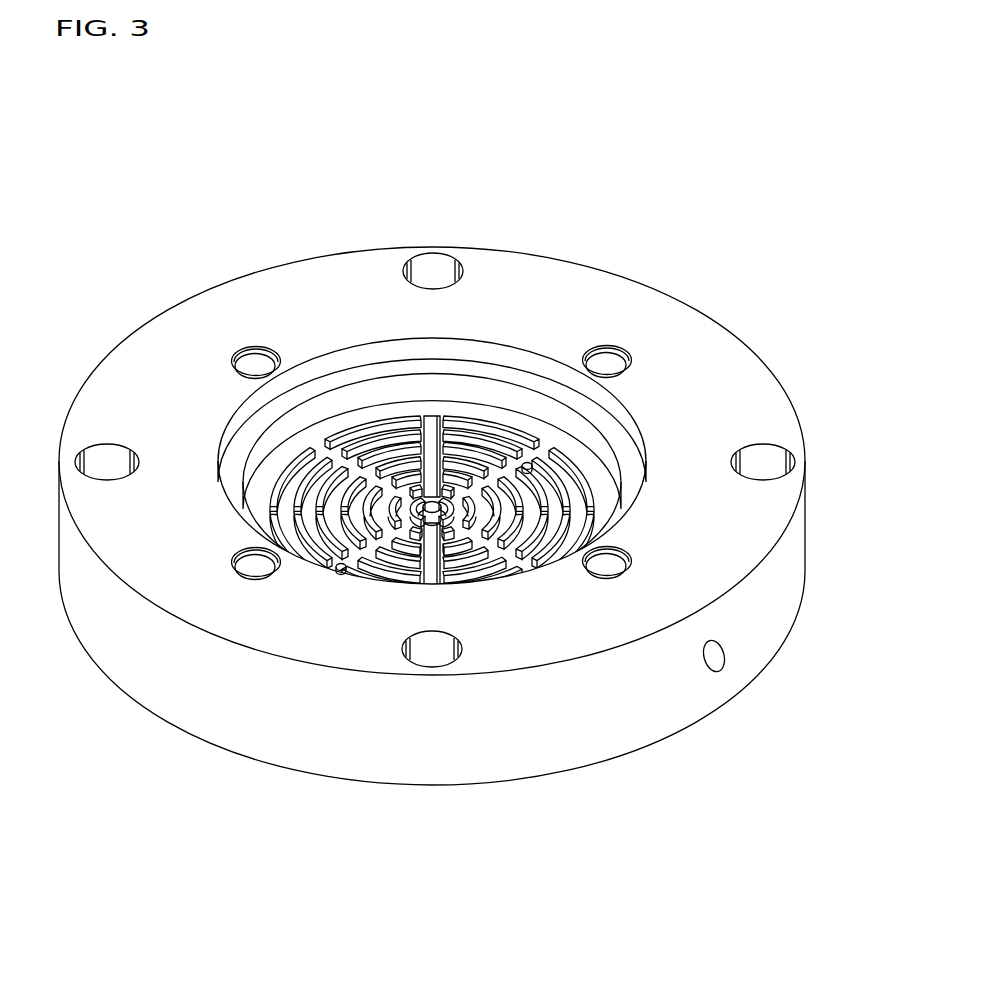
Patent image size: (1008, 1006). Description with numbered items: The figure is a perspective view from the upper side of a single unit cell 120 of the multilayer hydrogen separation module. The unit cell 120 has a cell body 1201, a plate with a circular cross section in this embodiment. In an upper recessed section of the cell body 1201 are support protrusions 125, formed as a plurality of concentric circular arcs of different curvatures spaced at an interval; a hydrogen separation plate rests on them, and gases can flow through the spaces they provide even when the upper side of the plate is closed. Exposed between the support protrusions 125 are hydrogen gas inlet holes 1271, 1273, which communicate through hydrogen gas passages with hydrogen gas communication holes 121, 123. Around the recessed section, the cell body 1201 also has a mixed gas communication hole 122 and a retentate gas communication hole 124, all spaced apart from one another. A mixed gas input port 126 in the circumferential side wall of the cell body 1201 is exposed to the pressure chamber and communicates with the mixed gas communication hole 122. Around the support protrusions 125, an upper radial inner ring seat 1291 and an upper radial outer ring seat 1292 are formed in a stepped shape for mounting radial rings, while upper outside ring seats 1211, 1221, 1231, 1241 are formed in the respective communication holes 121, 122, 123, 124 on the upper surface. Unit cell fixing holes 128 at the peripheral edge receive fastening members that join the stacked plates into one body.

The unit cell 120 is at (442, 112).
The cell body 1201 is at (365, 272).
The upper outside ring seat 1241 is at (250, 350).
The retentate gas communication hole 124 is at (256, 367).
The upper radial outer ring seat 1292 is at (483, 353).
The upper radial inner ring seat 1291 is at (505, 393).
The upper outside ring seat 1211 is at (604, 350).
The hydrogen gas communication hole 121 is at (608, 365).
The support protrusions 125 is at (500, 450).
The hydrogen gas inlet hole 1271 is at (528, 465).
The unit cell fixing hole 128 is at (770, 457).
The mixed gas input port 126 is at (714, 654).
The mixed gas communication hole 122 is at (613, 571).
The upper outside ring seat 1221 is at (617, 569).
The hydrogen gas communication hole 123 is at (248, 568).
The upper outside ring seat 1231 is at (265, 557).
The hydrogen gas inlet hole 1273 is at (343, 573).